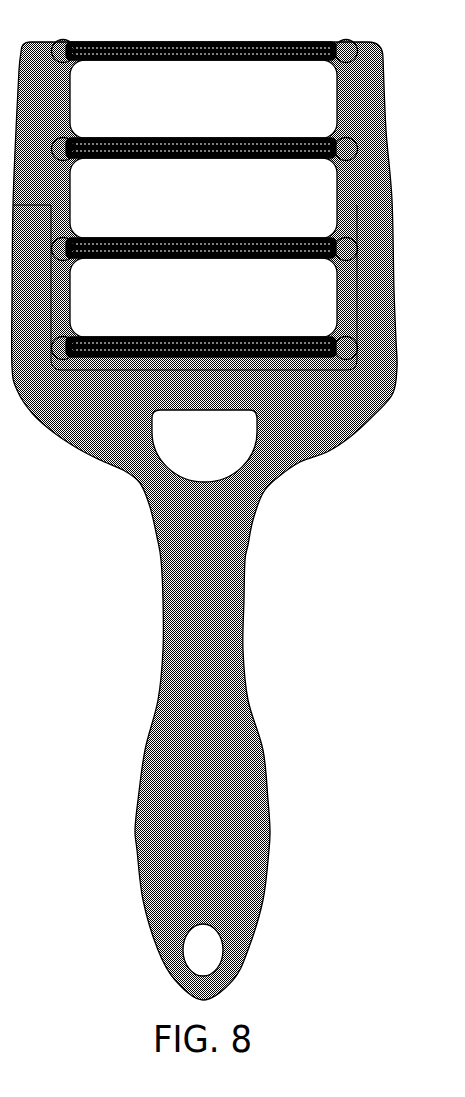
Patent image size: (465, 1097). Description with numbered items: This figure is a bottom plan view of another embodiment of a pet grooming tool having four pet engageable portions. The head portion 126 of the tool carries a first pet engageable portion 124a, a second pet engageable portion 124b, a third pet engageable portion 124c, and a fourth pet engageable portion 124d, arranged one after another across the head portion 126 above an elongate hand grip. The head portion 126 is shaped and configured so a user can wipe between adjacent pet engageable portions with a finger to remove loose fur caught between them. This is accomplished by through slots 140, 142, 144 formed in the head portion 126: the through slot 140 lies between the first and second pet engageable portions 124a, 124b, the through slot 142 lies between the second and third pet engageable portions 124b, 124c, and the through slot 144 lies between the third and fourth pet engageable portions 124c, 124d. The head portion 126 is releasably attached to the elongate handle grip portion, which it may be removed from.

The first pet engageable portion 124a is at (360, 358).
The second pet engageable portion 124b is at (360, 258).
The third pet engageable portion 124c is at (360, 158).
The fourth pet engageable portion 124d is at (380, 57).
The through slot 140 is at (332, 316).
The through slot 142 is at (330, 217).
The through slot 144 is at (330, 115).
The head portion 126 is at (270, 817).